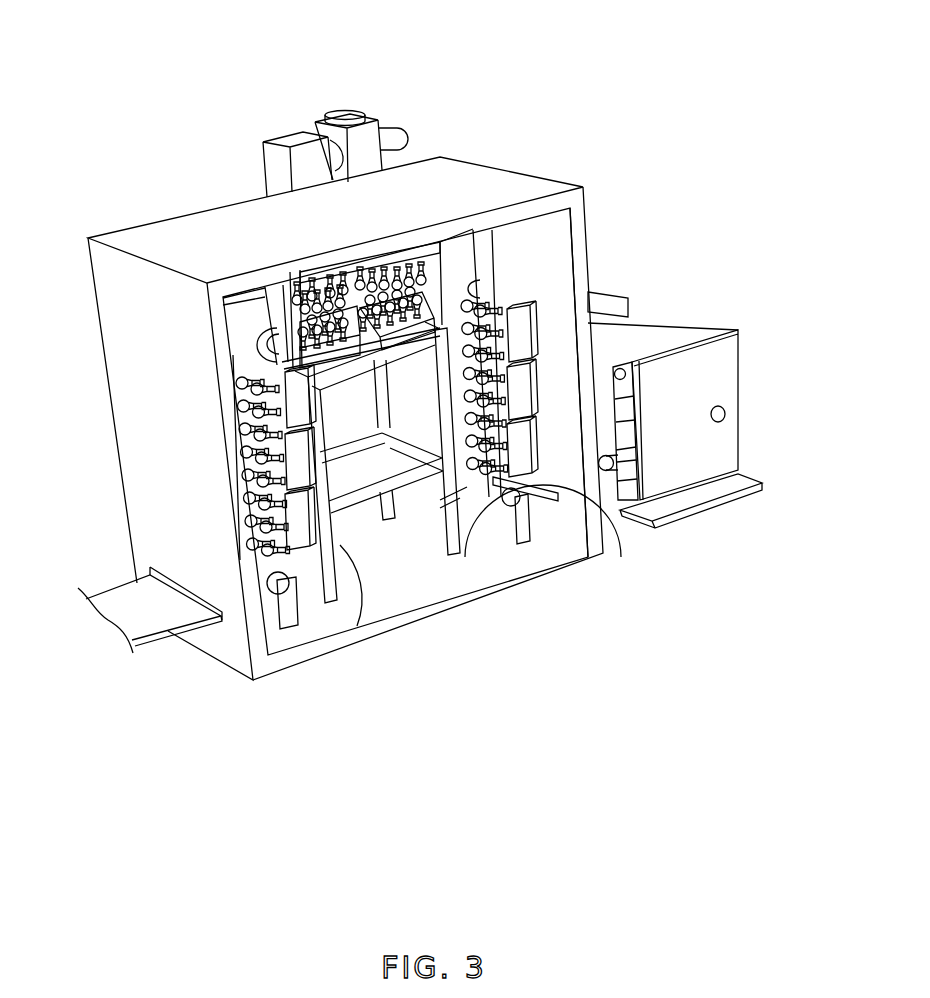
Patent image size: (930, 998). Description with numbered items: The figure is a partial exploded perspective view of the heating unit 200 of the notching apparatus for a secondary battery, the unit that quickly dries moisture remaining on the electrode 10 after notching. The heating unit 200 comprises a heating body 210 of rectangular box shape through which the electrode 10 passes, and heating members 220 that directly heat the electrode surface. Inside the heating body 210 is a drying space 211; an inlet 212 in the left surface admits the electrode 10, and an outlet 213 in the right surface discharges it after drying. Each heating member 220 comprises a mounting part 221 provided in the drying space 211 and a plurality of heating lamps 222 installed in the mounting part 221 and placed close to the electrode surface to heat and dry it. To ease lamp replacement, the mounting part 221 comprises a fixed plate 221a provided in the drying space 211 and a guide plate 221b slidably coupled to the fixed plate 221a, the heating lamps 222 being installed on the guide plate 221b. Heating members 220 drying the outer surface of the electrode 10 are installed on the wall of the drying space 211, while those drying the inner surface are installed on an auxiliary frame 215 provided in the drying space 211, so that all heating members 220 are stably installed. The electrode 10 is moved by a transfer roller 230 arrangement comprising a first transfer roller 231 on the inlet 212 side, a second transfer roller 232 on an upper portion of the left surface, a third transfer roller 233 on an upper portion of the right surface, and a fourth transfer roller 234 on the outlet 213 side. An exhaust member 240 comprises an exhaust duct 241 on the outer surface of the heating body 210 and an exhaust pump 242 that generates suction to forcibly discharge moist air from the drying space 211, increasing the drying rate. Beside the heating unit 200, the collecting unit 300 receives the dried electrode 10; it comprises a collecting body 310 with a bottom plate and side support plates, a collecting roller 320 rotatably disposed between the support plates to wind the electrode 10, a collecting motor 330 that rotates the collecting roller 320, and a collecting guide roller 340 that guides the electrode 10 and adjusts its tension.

The electrode 10 is at (157, 640).
The heating unit 200 is at (431, 464).
The heating body 210 is at (390, 434).
The drying space 211 is at (534, 245).
The inlet 212 is at (222, 620).
The outlet 213 is at (522, 475).
The auxiliary frame 215 is at (340, 587).
The heating member 220 is at (437, 498).
The mounting part 221 is at (567, 573).
The fixed plate 221a is at (530, 490).
The guide plate 221b is at (512, 497).
The heating lamp 222 is at (500, 510).
The transfer roller 230 is at (453, 438).
The first transfer roller 231 is at (288, 606).
The second transfer roller 232 is at (267, 345).
The third transfer roller 233 is at (483, 303).
The fourth transfer roller 234 is at (507, 503).
The exhaust member 240 is at (318, 98).
The exhaust duct 241 is at (290, 133).
The exhaust pump 242 is at (352, 107).
The collecting unit 300 is at (729, 380).
The collecting body 310 is at (735, 447).
The collecting roller 320 is at (761, 377).
The collecting motor 330 is at (628, 300).
The collecting guide roller 340 is at (622, 370).